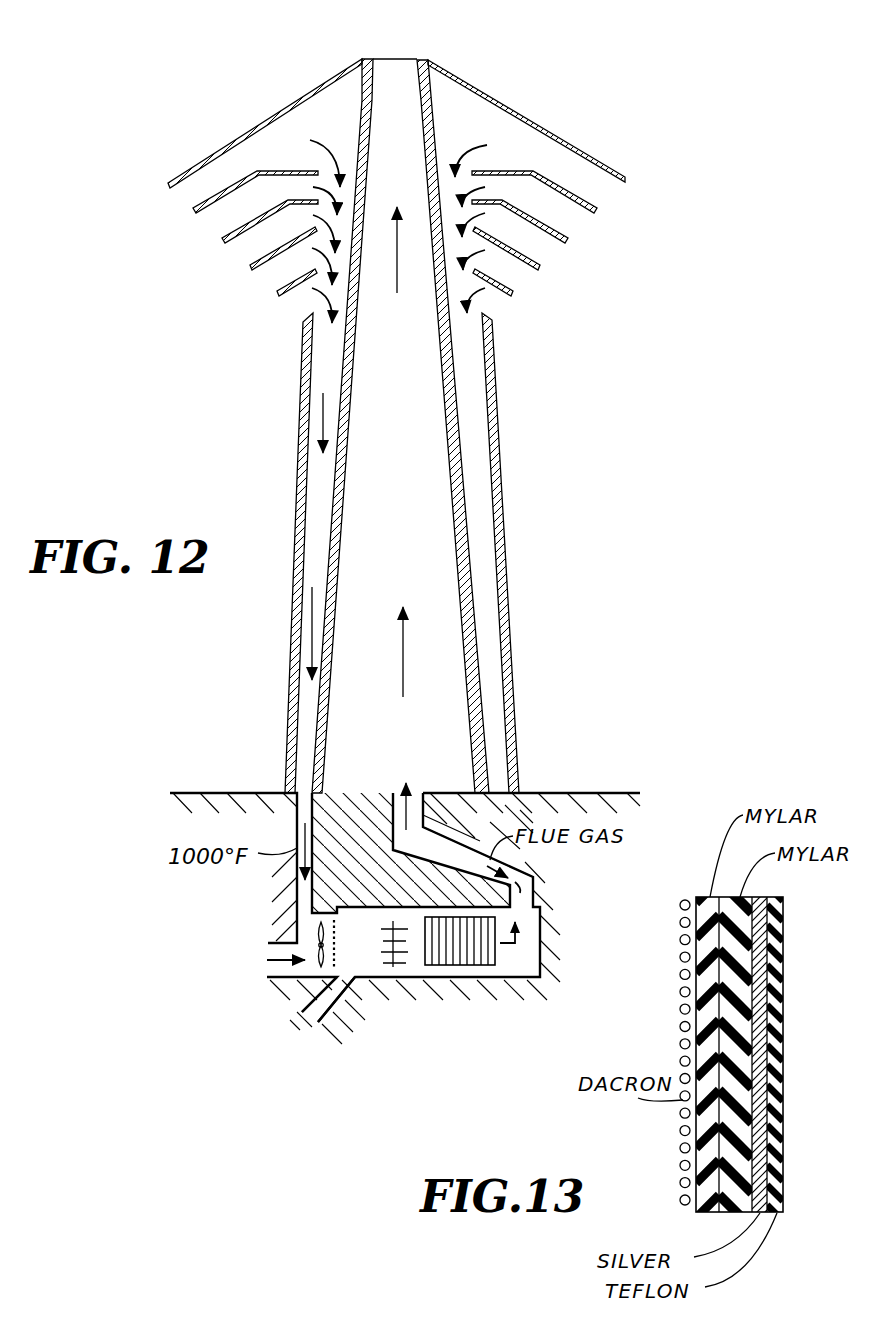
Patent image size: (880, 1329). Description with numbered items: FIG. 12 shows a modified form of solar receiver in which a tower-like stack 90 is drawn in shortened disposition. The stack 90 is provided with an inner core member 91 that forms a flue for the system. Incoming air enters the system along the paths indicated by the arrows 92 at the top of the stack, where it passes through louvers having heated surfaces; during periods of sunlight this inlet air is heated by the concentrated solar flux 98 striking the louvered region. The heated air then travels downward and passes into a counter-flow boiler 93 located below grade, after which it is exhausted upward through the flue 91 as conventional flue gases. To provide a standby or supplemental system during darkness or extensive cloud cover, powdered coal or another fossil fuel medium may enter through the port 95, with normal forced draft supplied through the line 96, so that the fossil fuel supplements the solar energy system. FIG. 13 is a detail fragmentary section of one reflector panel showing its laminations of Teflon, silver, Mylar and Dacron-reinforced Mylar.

The stack 90 is at (523, 452).
The inner core member 91 is at (416, 474).
The arrows 92 is at (310, 140).
The counter-flow boiler 93 is at (468, 965).
The port 95 is at (313, 1022).
The line 96 is at (268, 952).
The concentrated solar flux 98 is at (602, 186).